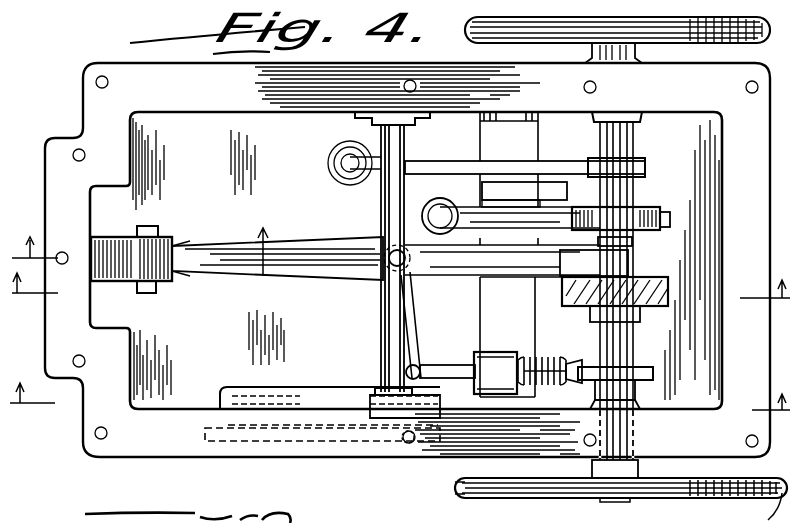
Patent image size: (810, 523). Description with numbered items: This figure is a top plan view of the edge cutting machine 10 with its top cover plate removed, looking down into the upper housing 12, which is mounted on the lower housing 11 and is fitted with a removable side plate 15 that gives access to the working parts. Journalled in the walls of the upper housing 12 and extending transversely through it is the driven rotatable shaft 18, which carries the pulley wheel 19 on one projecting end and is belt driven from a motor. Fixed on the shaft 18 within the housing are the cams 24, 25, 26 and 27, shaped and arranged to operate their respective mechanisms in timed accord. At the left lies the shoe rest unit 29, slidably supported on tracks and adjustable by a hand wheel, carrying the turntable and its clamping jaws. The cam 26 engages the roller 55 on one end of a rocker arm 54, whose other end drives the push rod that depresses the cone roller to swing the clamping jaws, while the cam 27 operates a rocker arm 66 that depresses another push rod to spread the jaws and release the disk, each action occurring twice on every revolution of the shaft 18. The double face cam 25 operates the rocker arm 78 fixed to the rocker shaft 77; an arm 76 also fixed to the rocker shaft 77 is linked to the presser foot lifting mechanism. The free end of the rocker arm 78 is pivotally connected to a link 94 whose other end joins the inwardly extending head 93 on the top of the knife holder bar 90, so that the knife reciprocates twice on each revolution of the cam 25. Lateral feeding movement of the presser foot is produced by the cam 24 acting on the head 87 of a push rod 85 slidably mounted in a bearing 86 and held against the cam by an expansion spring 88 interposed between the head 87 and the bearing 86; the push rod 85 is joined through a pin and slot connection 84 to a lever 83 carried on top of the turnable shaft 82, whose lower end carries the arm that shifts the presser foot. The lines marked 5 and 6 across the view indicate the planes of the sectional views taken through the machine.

The edge cutting machine 10 is at (407, 247).
The upper housing 12 is at (172, 393).
The removable side plate 15 is at (356, 436).
The driven rotatable shaft 18 is at (636, 130).
The pulley wheel 19 is at (678, 497).
The cam 24 is at (653, 373).
The double face cam 25 is at (668, 298).
The cam 26 is at (670, 218).
The cam 27 is at (645, 166).
The shoe rest unit 29 is at (636, 278).
The rocker arm 54 is at (511, 216).
The roller 55 is at (640, 208).
The rocker arm 66 is at (455, 162).
The arm 76 is at (323, 417).
The rocker shaft 77 is at (380, 378).
The rocker arm 78 is at (322, 262).
The turnable shaft 82 is at (392, 272).
The lever 83 is at (414, 330).
The pin and slot connection 84 is at (426, 360).
The push rod 85 is at (466, 365).
The bearing 86 is at (499, 352).
The head 87 is at (575, 364).
The expansion spring 88 is at (546, 357).
The knife holder bar 90 is at (91, 268).
The inwardly extending head 93 is at (178, 243).
The link 94 is at (155, 226).
The section line 5 is at (400, 414).
The section line 6 is at (401, 300).
The lower housing 11 is at (149, 245).